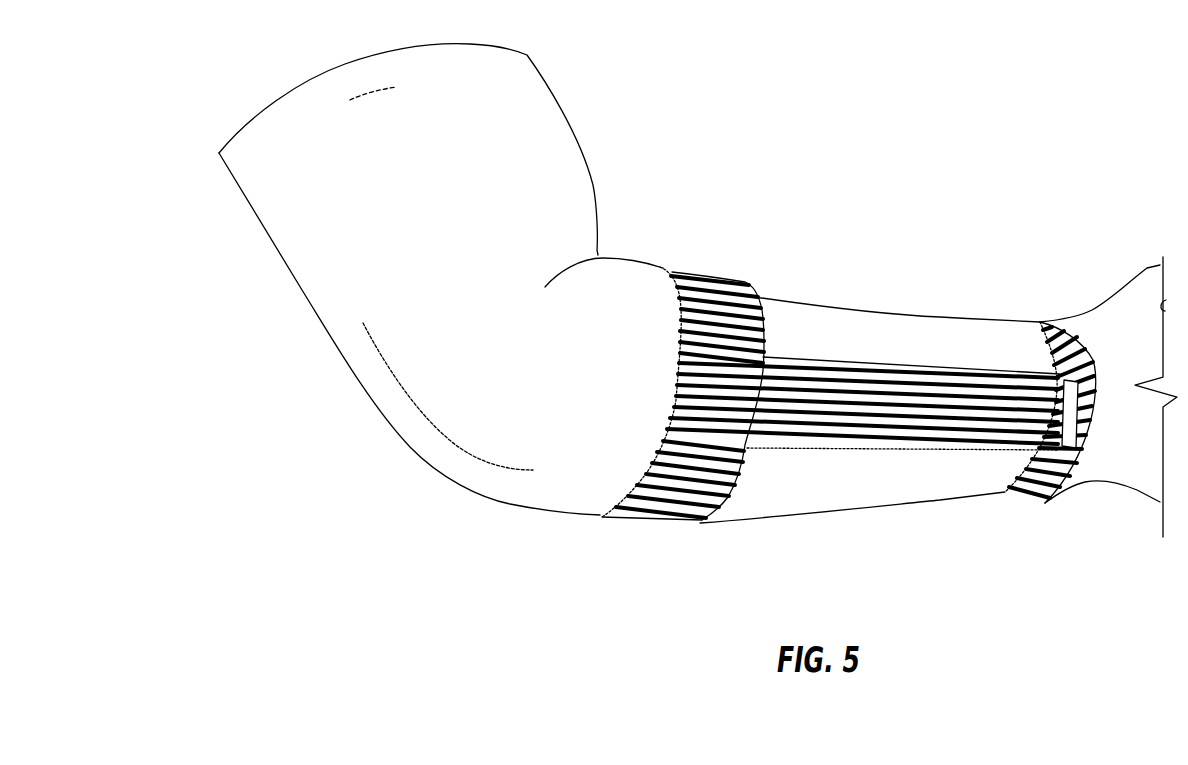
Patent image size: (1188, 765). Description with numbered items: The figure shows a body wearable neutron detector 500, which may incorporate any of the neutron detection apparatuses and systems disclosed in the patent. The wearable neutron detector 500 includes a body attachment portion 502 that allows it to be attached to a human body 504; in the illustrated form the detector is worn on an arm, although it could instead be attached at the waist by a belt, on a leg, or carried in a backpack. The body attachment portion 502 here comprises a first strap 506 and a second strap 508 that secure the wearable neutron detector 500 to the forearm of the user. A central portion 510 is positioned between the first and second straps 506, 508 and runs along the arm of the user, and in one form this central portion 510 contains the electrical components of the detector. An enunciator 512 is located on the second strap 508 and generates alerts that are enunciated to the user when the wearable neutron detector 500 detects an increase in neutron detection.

The wearable neutron detector 500 is at (974, 247).
The body attachment portion 502 is at (680, 338).
The human body 504 is at (470, 470).
The first strap 506 is at (842, 425).
The second strap 508 is at (1063, 318).
The central portion 510 is at (906, 368).
The enunciator 512 is at (1078, 420).